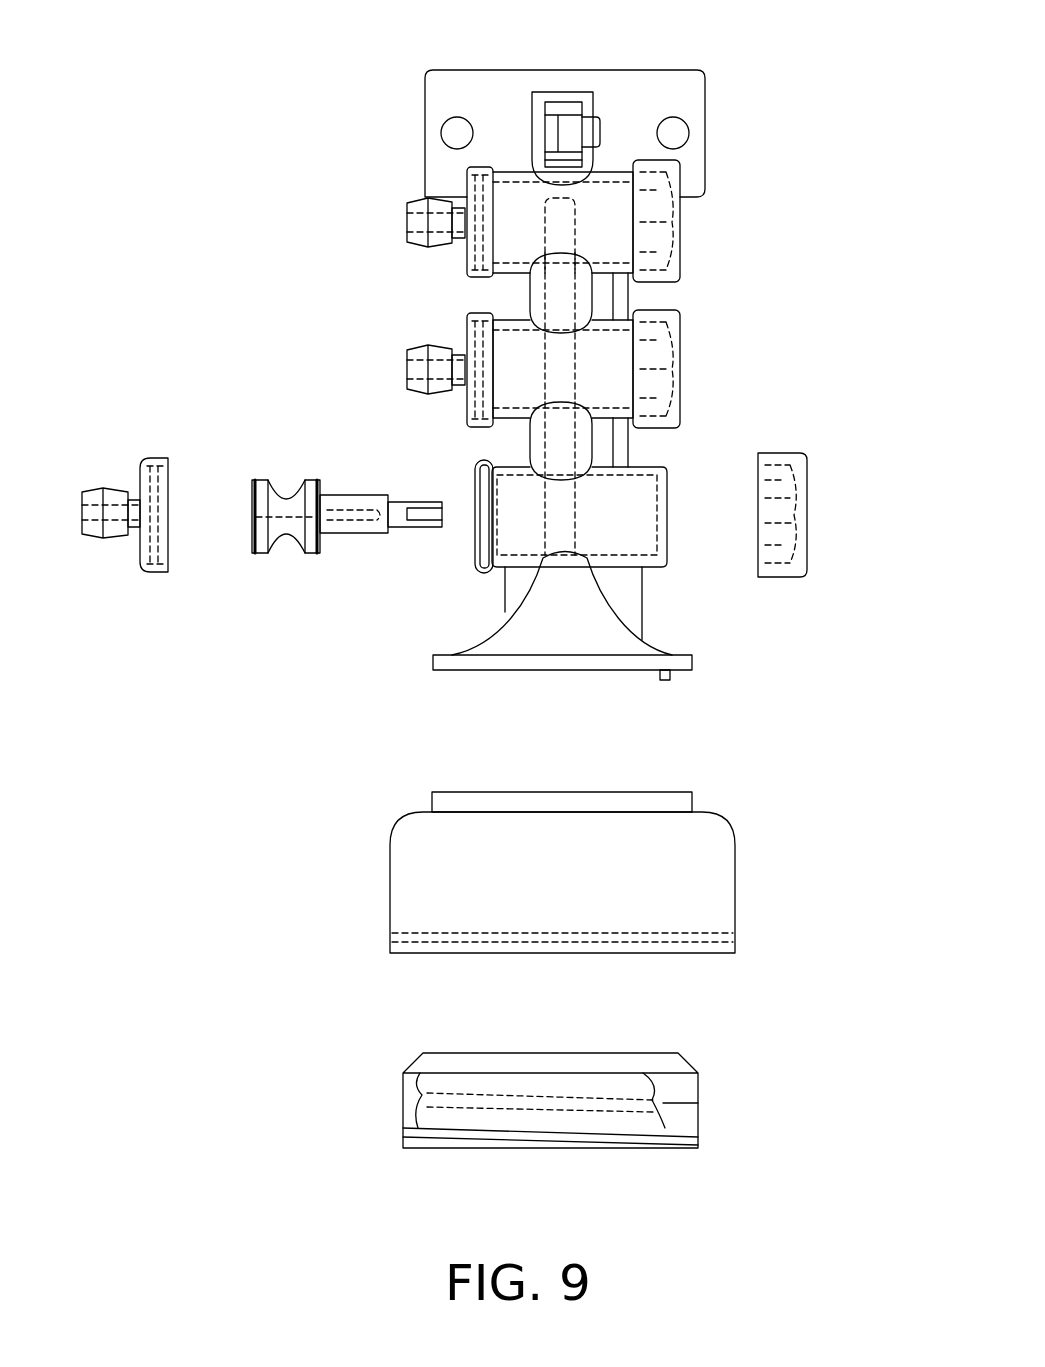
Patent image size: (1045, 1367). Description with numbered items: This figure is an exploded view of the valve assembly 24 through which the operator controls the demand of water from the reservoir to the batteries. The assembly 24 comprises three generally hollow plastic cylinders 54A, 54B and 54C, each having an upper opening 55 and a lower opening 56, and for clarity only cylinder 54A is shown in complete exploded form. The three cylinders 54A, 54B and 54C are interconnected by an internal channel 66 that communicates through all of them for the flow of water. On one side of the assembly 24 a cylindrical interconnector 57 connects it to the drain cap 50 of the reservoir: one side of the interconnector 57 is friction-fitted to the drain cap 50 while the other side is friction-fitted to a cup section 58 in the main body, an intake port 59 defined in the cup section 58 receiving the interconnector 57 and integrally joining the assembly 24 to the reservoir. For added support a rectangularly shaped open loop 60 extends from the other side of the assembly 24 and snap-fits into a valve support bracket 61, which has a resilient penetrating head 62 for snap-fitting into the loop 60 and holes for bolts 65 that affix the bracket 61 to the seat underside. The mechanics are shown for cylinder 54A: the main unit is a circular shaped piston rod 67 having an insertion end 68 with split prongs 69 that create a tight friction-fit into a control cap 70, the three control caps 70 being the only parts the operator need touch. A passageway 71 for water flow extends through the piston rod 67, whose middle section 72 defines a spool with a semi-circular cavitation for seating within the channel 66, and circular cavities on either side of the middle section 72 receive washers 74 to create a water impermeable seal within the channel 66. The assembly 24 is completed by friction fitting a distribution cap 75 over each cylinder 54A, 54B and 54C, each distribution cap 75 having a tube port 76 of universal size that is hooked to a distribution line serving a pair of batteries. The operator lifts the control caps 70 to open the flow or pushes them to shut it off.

The valve assembly 24 is at (738, 30).
The drain cap 50 is at (403, 1100).
The cylinder 54A is at (518, 518).
The cylinder 54B is at (520, 350).
The cylinder 54C is at (500, 212).
The upper opening 55 is at (559, 512).
The lower opening 56 is at (475, 475).
The cylindrical interconnector 57 is at (735, 888).
The cup section 58 is at (645, 645).
The intake port 59 is at (630, 672).
The rectangularly shaped open loop 60 is at (565, 93).
The valve support bracket 61 is at (708, 88).
The resilient penetrating head 62 is at (603, 118).
The bolts 65 is at (441, 133).
The internal channel 66 is at (583, 295).
The piston rod 67 is at (254, 534).
The insertion end 68 is at (381, 519).
The split prongs 69 is at (398, 537).
The control cap 70 is at (683, 222).
The passageway 71 is at (280, 538).
The middle section 72 is at (256, 483).
The washers 74 is at (300, 497).
The distribution cap 75 is at (99, 538).
The tube port 76 is at (95, 490).